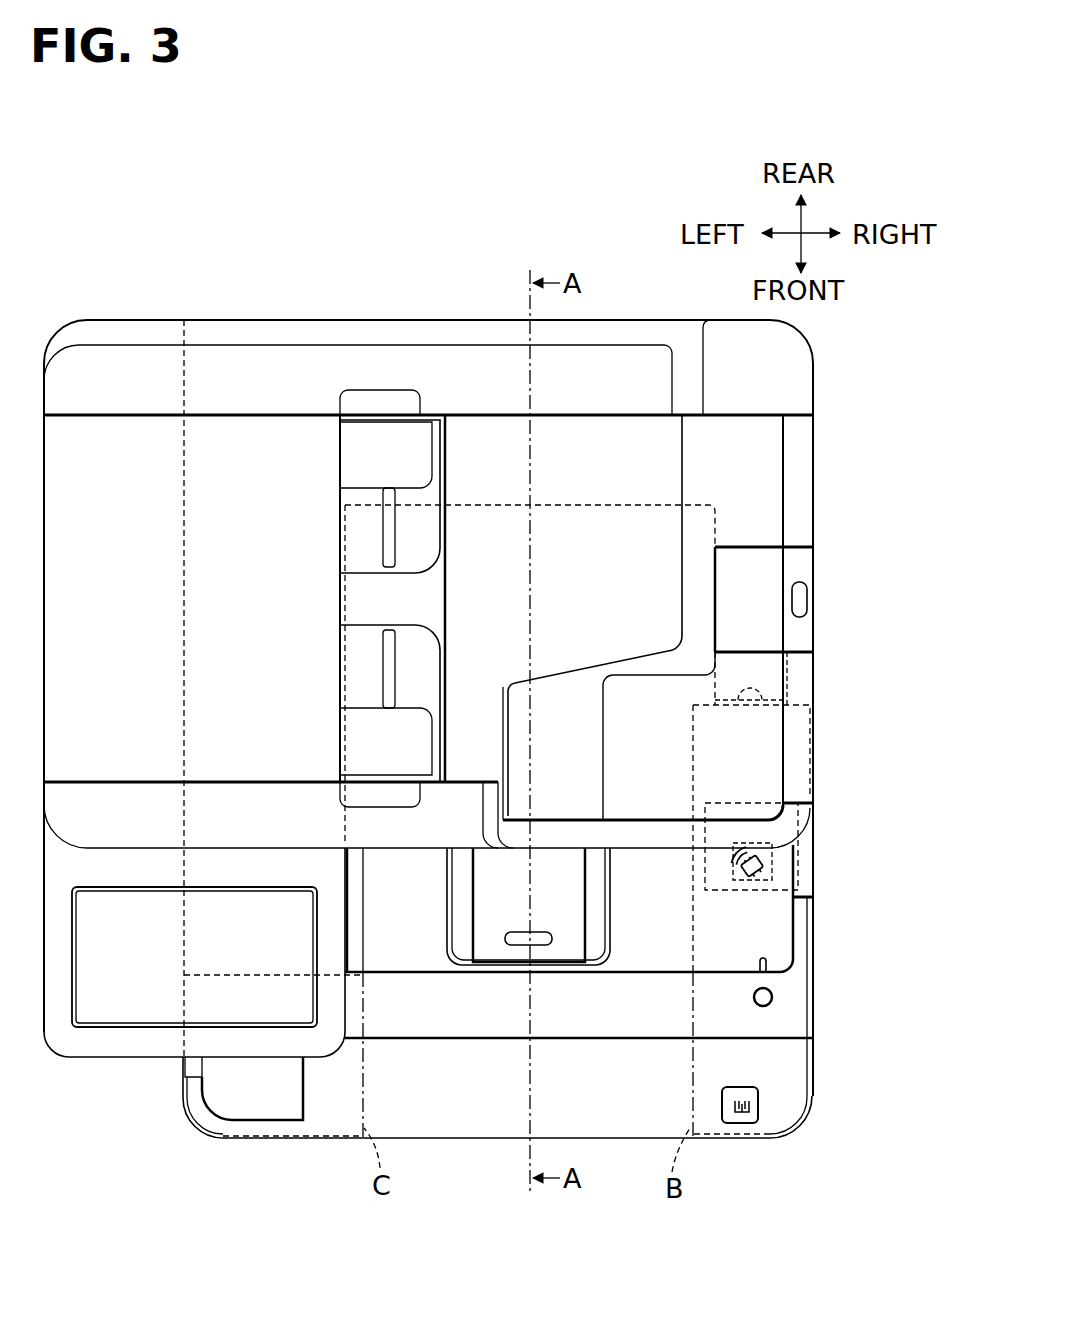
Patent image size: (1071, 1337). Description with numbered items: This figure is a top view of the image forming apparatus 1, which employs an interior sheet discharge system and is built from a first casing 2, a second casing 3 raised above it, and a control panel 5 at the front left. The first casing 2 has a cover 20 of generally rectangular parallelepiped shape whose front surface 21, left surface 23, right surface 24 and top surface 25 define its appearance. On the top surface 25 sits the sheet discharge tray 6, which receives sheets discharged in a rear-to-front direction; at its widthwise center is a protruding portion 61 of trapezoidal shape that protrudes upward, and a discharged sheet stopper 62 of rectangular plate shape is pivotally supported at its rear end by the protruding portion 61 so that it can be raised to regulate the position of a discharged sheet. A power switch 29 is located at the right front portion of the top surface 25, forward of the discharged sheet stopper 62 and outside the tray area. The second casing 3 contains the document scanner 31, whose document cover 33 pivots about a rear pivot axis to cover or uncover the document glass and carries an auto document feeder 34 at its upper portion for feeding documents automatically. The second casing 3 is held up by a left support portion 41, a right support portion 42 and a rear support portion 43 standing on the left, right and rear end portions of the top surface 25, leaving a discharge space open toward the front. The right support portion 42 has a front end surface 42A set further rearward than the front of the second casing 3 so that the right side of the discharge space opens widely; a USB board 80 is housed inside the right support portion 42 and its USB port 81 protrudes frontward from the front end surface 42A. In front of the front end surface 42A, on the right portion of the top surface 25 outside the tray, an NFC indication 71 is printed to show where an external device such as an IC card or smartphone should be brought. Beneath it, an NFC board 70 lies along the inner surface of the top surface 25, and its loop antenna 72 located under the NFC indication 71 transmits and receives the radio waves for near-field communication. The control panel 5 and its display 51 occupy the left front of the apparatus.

The image forming apparatus 1 is at (93, 272).
The first casing 2 is at (182, 1125).
The second casing 3 is at (158, 308).
The control panel 5 is at (72, 1062).
The sheet discharge tray 6 is at (390, 868).
The cover 20 is at (204, 1138).
The front surface 21 is at (290, 1140).
The left surface 23 is at (185, 1073).
The right surface 24 is at (806, 914).
The top surface 25 is at (328, 1128).
The power switch 29 is at (775, 996).
The document scanner 31 is at (220, 316).
The document cover 33 is at (800, 388).
The auto document feeder 34 is at (270, 435).
The left support portion 41 is at (350, 598).
The right support portion 42 is at (712, 537).
The front end surface 42A is at (717, 708).
The rear support portion 43 is at (556, 507).
The display 51 is at (102, 1058).
The protruding portion 61 is at (446, 921).
The discharged sheet stopper 62 is at (480, 868).
The NFC board 70 is at (800, 812).
The NFC indication 71 is at (762, 862).
The loop antenna 72 is at (774, 850).
The USB board 80 is at (787, 668).
The USB port 81 is at (758, 705).